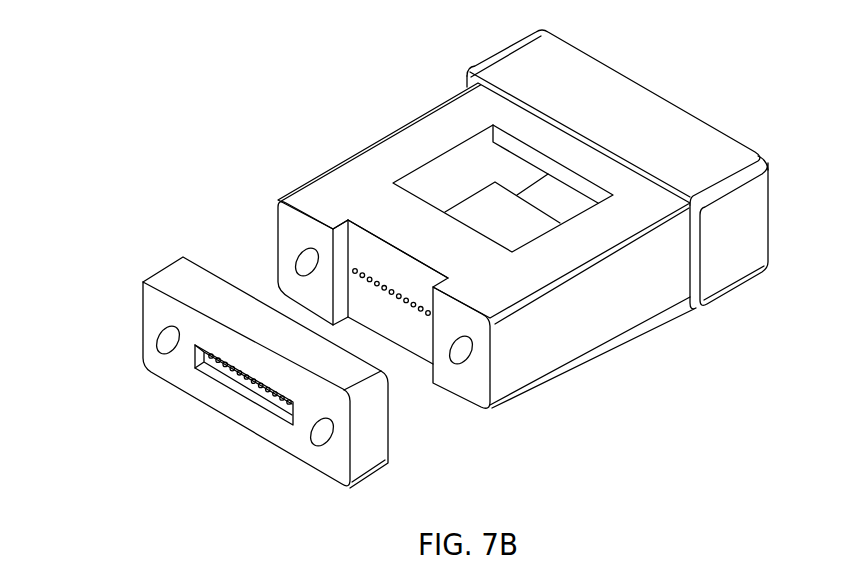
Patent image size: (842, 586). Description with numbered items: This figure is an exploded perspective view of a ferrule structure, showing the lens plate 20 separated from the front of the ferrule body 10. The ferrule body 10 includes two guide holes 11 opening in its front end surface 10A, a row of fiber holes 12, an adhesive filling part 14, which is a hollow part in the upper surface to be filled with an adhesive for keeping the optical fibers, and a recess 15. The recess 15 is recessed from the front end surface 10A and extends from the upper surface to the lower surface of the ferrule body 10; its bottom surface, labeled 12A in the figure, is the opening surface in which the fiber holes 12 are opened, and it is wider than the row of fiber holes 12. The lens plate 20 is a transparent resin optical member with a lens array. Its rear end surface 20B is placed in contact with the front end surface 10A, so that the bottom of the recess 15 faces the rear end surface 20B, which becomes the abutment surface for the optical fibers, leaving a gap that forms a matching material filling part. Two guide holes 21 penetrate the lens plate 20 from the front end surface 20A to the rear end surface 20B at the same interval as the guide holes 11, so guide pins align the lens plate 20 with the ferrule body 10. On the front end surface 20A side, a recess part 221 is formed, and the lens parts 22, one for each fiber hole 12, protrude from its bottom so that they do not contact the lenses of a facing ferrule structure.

The ferrule body 10 is at (495, 248).
The front end surface of the ferrule body 10A is at (297, 220).
The guide holes 11 is at (305, 262).
The fiber holes 12 is at (412, 306).
The connector mounting surface 12A is at (382, 253).
The adhesive filling part 14 is at (462, 162).
The recess 15 is at (390, 322).
The lens plate 20 is at (211, 350).
The front end surface of the lens plate 20A is at (150, 312).
The rear end surface of the lens plate 20B is at (215, 268).
The guide holes 21 is at (163, 345).
The lens parts 22 is at (232, 370).
The recess part 221 is at (199, 374).